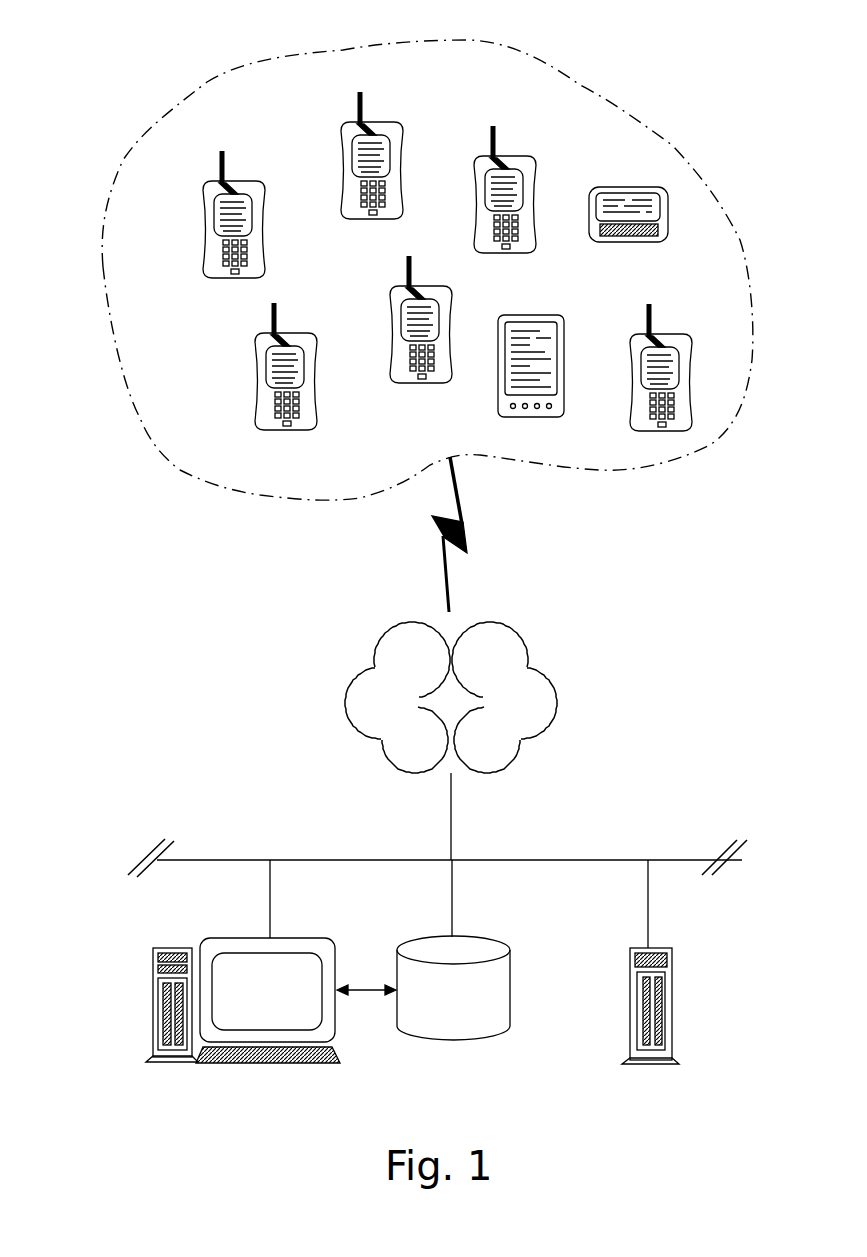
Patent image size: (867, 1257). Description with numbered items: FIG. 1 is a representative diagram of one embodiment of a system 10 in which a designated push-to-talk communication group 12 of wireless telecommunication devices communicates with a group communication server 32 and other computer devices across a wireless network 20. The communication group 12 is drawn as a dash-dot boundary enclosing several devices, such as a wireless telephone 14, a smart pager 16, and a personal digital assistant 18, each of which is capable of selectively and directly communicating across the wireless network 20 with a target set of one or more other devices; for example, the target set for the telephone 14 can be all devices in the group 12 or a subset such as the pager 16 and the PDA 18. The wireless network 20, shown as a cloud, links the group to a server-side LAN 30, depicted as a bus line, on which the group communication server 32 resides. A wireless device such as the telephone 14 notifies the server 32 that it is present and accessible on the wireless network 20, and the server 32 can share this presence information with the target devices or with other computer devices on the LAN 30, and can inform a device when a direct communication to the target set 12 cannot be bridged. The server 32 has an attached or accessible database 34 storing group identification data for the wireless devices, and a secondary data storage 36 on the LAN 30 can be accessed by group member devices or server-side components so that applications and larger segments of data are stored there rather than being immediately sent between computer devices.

The system 10 is at (690, 60).
The communication group 12 is at (165, 478).
The wireless telephone 14 is at (393, 123).
The smart pager 16 is at (632, 243).
The personal digital assistant (PDA) 18 is at (499, 384).
The wireless network 20 is at (554, 696).
The server-side LAN 30 is at (238, 860).
The group communication server 32 is at (240, 937).
The database 34 is at (512, 990).
The secondary data storage 36 is at (673, 1003).